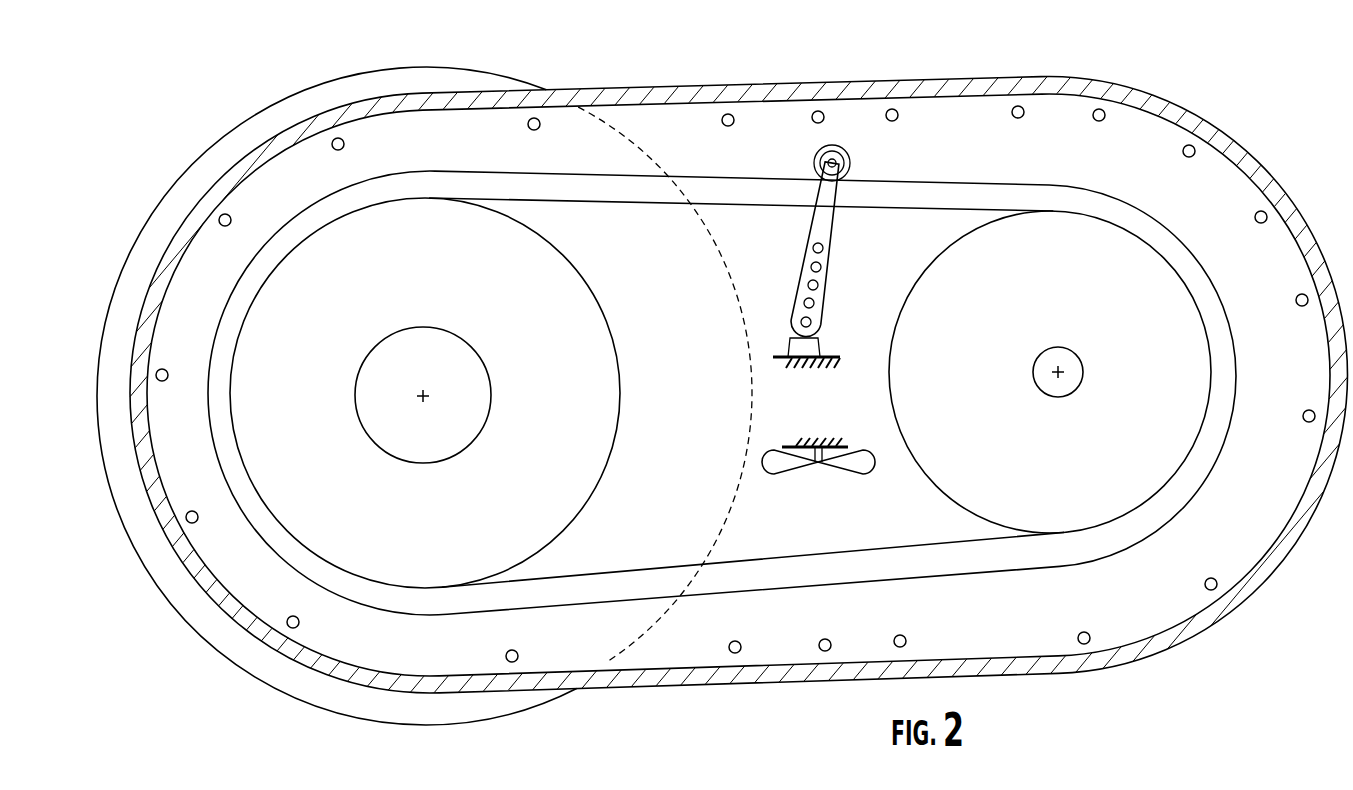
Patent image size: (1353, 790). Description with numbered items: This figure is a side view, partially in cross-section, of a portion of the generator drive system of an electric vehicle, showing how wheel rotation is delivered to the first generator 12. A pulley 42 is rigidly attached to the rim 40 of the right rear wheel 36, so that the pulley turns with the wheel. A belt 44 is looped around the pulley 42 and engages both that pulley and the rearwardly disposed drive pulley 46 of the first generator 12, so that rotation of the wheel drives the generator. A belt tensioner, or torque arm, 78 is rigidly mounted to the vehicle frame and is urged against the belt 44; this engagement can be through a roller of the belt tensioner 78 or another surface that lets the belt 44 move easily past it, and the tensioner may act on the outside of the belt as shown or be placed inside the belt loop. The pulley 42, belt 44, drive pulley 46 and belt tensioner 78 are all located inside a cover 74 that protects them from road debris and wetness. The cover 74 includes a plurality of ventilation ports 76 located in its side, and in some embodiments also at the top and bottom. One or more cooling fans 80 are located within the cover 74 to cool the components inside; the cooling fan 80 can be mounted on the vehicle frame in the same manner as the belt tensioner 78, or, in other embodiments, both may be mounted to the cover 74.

The first generator 12 is at (1072, 382).
The right rear wheel 36 is at (128, 300).
The rim 40 is at (468, 403).
The pulley 42 is at (550, 435).
The belt 44 is at (785, 557).
The drive pulley 46 is at (1000, 466).
The cover 74 is at (852, 668).
The ventilation ports 76 is at (186, 520).
The belt tensioner 78 is at (829, 276).
The cooling fan 80 is at (858, 473).